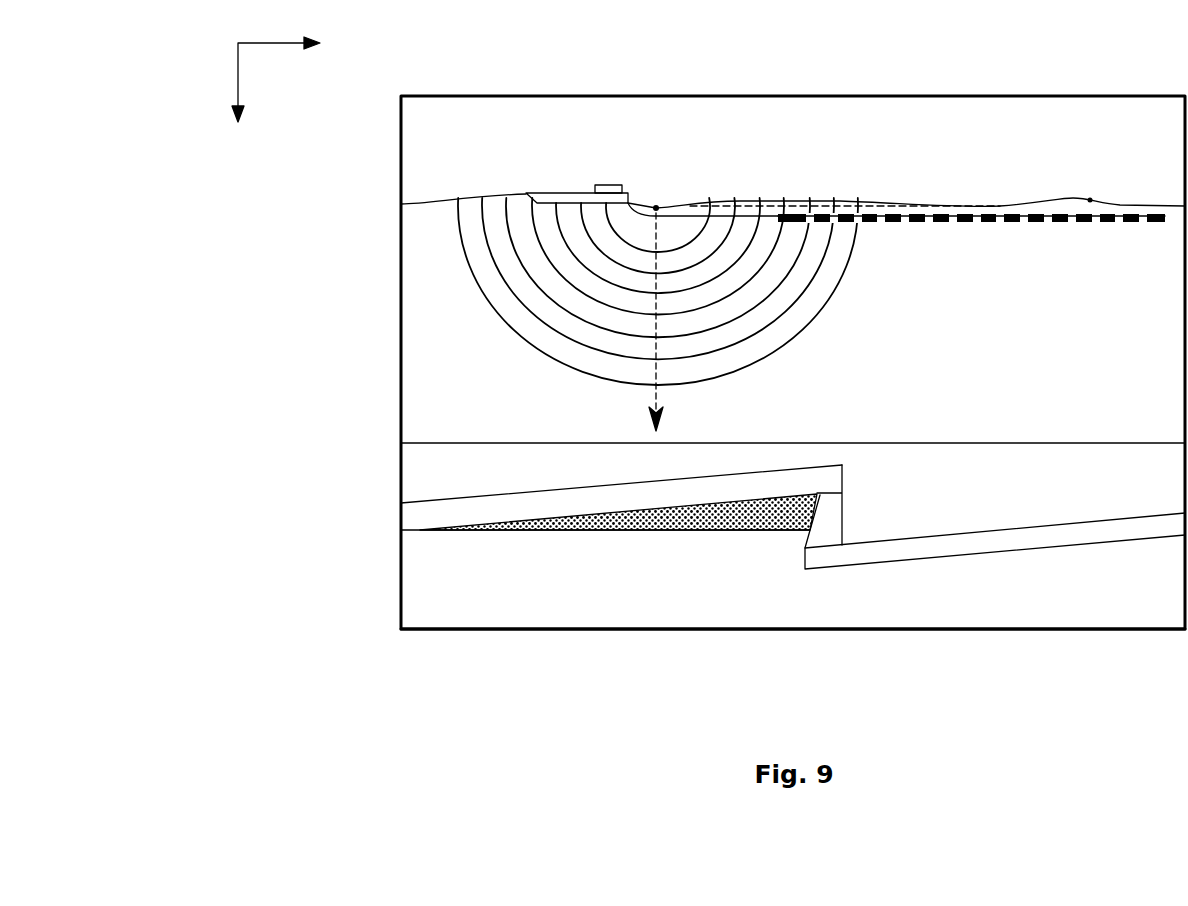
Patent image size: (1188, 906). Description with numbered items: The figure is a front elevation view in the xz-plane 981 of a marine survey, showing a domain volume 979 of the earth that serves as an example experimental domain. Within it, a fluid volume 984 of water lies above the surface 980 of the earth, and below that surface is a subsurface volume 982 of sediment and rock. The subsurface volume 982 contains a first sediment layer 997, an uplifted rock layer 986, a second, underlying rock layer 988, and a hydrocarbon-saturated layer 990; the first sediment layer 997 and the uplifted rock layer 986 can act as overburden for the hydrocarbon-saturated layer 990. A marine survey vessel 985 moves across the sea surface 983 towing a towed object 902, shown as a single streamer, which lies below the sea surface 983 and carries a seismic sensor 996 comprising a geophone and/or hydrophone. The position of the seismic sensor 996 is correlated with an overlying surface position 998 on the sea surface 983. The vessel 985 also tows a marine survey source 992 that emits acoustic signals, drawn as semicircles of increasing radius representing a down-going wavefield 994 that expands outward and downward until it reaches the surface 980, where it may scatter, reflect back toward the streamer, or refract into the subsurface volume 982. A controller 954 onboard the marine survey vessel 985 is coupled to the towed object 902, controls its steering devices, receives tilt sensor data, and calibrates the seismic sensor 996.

The xz-plane 981 is at (238, 43).
The domain volume 979 is at (302, 266).
The fluid volume 984 is at (420, 348).
The sea surface 983 is at (928, 203).
The surface position 998 is at (1090, 200).
The marine survey vessel 985 is at (567, 193).
The controller 954 is at (611, 185).
The marine survey source 992 is at (656, 206).
The down-going wavefield 994 is at (818, 306).
The seismic sensor 996 is at (1092, 224).
The towed object 902 is at (963, 246).
The surface 980 is at (457, 443).
The subsurface volume 982 is at (420, 463).
The uplifted rock layer 986 is at (420, 520).
The hydrocarbon-saturated layer 990 is at (622, 530).
The second underlying rock layer 988 is at (525, 620).
The first sediment layer 997 is at (1015, 503).